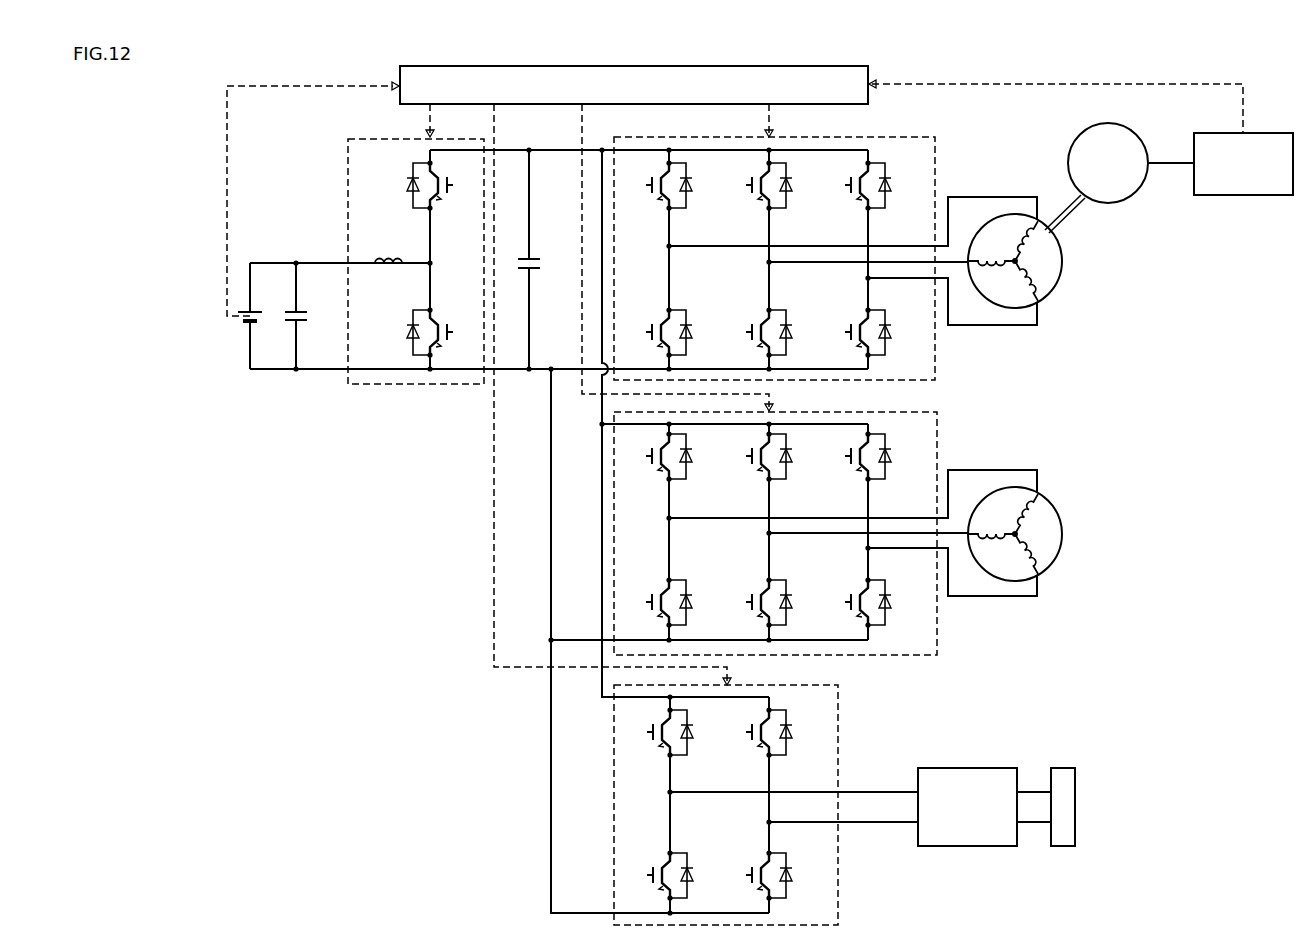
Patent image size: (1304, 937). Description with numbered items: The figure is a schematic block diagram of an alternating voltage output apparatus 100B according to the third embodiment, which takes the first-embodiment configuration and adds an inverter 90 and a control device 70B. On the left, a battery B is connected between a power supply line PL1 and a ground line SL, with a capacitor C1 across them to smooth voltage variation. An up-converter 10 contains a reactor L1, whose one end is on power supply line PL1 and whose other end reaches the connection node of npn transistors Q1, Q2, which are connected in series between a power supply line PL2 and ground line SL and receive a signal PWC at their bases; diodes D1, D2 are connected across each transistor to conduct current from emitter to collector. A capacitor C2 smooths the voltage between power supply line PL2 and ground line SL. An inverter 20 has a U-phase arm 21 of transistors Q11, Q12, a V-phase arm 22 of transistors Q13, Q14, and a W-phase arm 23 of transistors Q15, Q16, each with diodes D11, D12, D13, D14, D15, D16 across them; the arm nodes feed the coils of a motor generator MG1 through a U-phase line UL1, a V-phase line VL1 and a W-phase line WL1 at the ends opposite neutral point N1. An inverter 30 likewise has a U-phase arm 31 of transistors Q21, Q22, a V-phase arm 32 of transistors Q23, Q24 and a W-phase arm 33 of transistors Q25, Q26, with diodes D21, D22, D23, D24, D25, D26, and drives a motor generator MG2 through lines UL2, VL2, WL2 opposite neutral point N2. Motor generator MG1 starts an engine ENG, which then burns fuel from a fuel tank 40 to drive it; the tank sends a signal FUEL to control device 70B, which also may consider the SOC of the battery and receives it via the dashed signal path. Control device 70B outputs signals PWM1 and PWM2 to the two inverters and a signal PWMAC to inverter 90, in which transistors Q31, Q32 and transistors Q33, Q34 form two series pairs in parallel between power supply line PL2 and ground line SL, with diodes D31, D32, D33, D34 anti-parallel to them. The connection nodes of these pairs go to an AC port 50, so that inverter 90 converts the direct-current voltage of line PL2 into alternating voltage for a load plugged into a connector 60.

The alternating voltage output apparatus 100B is at (167, 100).
The up-converter 10 is at (416, 276).
The inverter 20 is at (825, 273).
The inverter 30 is at (794, 548).
The fuel tank 40 is at (1264, 133).
The AC port 50 is at (941, 768).
The connector 60 is at (1062, 768).
The control device 70B is at (848, 106).
The inverter 90 is at (766, 793).
The U-phase arm 21 is at (665, 256).
The V-phase arm 22 is at (763, 272).
The W-phase arm 23 is at (863, 288).
The U-phase arm 31 is at (665, 528).
The V-phase arm 32 is at (763, 544).
The W-phase arm 33 is at (863, 560).
The battery B is at (260, 312).
The capacitor C1 is at (305, 312).
The capacitor C2 is at (538, 264).
The reactor L1 is at (390, 247).
The power supply line PL1 is at (322, 260).
The power supply line PL2 is at (554, 147).
The ground line SL is at (523, 374).
The npn transistor Q1 is at (444, 198).
The npn transistor Q2 is at (444, 326).
The diode D1 is at (404, 185).
The diode D2 is at (404, 332).
The npn transistor Q11 is at (654, 197).
The npn transistor Q12 is at (654, 326).
The npn transistor Q13 is at (754, 197).
The npn transistor Q14 is at (754, 326).
The npn transistor Q15 is at (853, 197).
The npn transistor Q16 is at (853, 326).
The diode D11 is at (698, 185).
The diode D12 is at (698, 332).
The diode D13 is at (798, 185).
The diode D14 is at (798, 332).
The diode D15 is at (897, 185).
The diode D16 is at (897, 332).
The npn transistor Q21 is at (654, 468).
The npn transistor Q22 is at (654, 596).
The npn transistor Q23 is at (754, 468).
The npn transistor Q24 is at (754, 596).
The npn transistor Q25 is at (853, 468).
The npn transistor Q26 is at (853, 596).
The diode D21 is at (698, 456).
The diode D22 is at (698, 602).
The diode D23 is at (798, 456).
The diode D24 is at (798, 602).
The diode D25 is at (897, 456).
The diode D26 is at (897, 602).
The npn transistor Q31 is at (655, 744).
The npn transistor Q32 is at (655, 869).
The npn transistor Q33 is at (754, 744).
The npn transistor Q34 is at (754, 869).
The diode D31 is at (699, 732).
The diode D32 is at (699, 875).
The diode D33 is at (798, 732).
The diode D34 is at (798, 875).
The motor generator MG1 is at (1028, 254).
The motor generator MG2 is at (1028, 526).
The neutral point N1 is at (1012, 266).
The neutral point N2 is at (1012, 539).
The U-phase line UL1 is at (1015, 197).
The V-phase line VL1 is at (957, 260).
The W-phase line WL1 is at (1016, 325).
The U-phase line UL2 is at (1015, 470).
The V-phase line VL2 is at (957, 532).
The W-phase line WL2 is at (1016, 596).
The engine ENG is at (1108, 205).
The state of charge SOC is at (313, 188).
The signal FUEL is at (1056, 96).
The signal PWC is at (453, 120).
The signal PWM1 is at (800, 120).
The signal PWM2 is at (677, 257).
The signal PWMAC is at (569, 394).